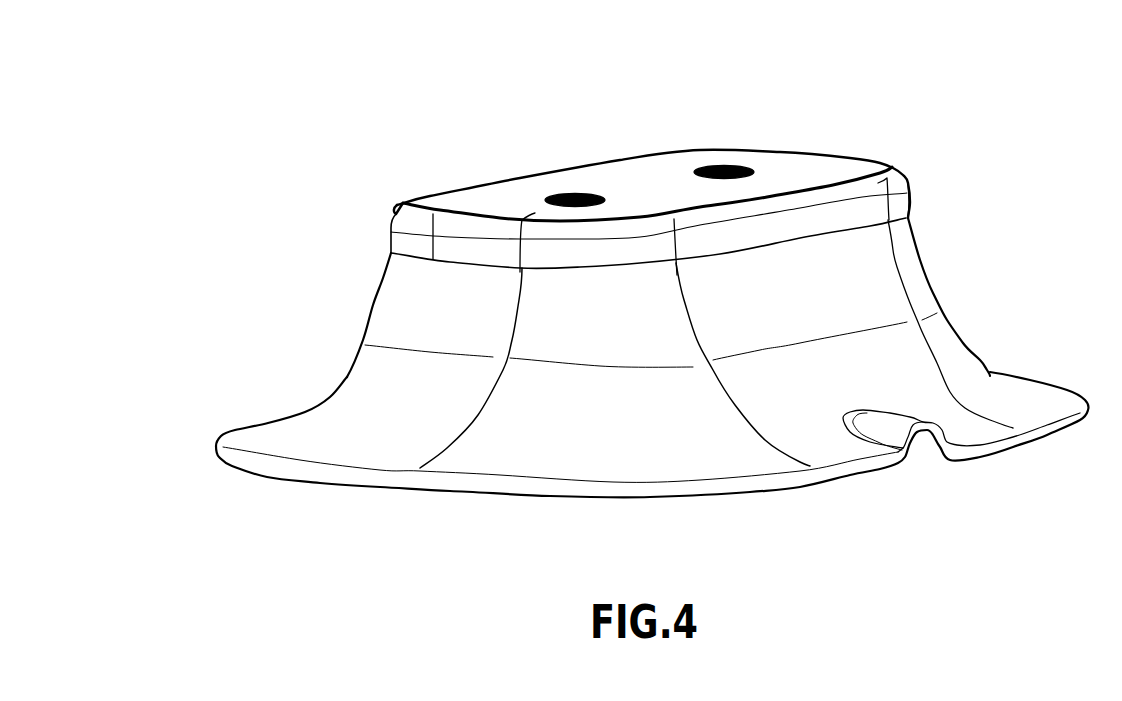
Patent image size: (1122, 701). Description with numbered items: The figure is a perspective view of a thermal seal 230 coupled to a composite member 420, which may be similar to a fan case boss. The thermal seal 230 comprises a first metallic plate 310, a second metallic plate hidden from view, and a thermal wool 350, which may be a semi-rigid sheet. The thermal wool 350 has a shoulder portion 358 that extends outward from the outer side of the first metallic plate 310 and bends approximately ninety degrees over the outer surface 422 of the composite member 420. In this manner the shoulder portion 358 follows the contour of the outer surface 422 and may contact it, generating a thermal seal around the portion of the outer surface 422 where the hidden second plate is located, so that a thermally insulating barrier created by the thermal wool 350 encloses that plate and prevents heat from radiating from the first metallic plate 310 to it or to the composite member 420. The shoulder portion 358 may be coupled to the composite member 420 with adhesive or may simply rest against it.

The thermal seal 230 is at (518, 80).
The first metallic plate 310 is at (643, 178).
The thermal wool 350 is at (394, 220).
The shoulder portion 358 is at (907, 183).
The composite member 420 is at (372, 338).
The outer surface 422 is at (370, 402).